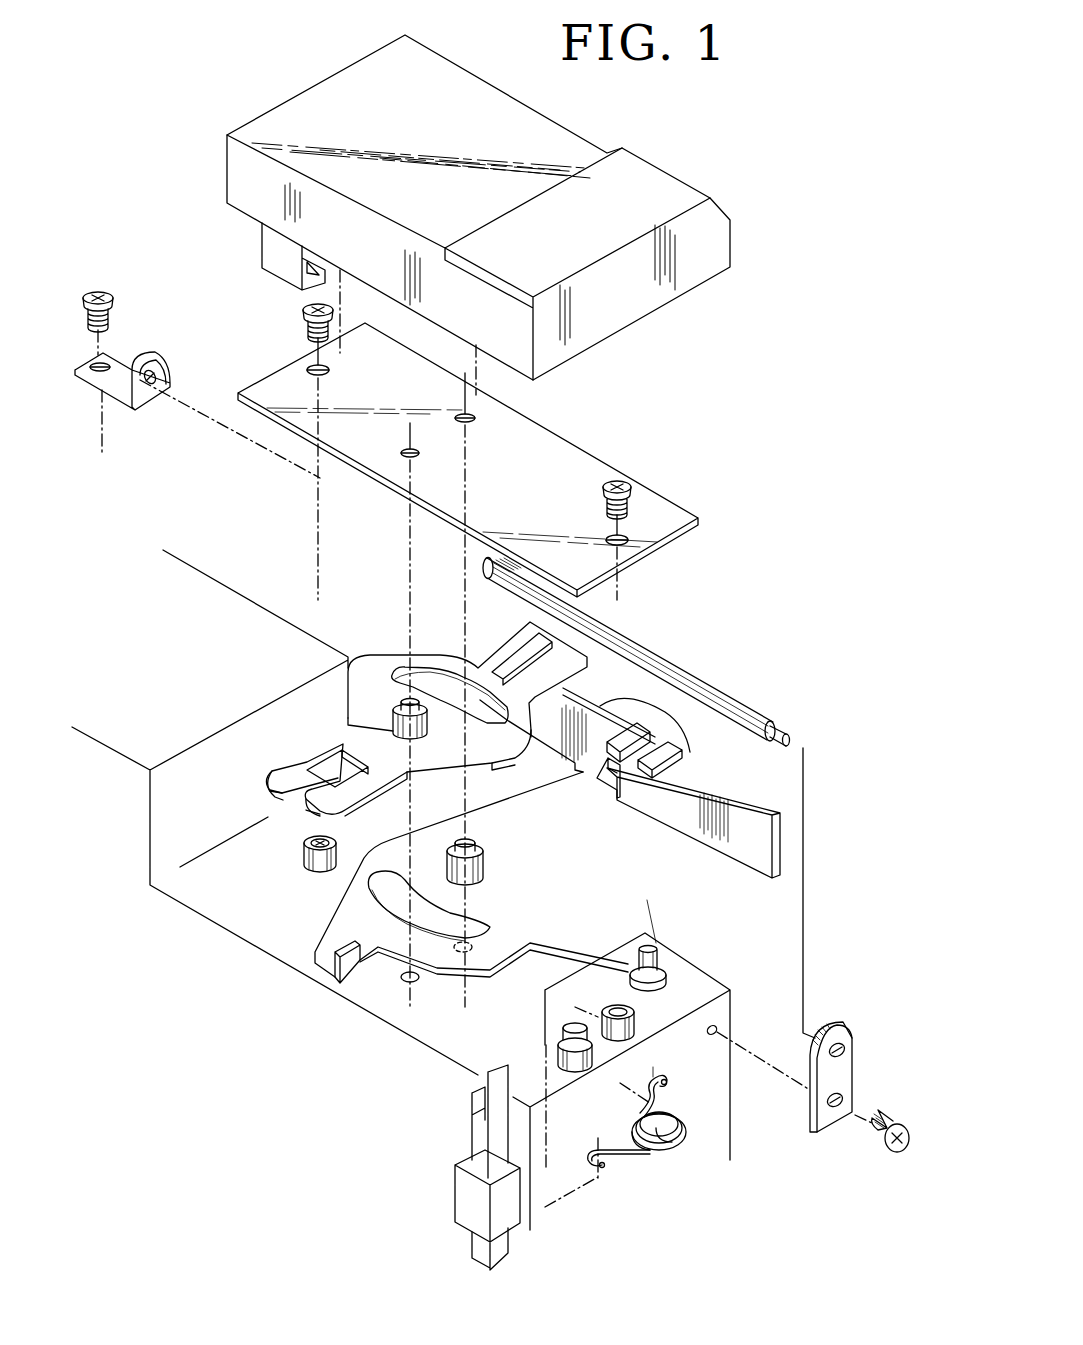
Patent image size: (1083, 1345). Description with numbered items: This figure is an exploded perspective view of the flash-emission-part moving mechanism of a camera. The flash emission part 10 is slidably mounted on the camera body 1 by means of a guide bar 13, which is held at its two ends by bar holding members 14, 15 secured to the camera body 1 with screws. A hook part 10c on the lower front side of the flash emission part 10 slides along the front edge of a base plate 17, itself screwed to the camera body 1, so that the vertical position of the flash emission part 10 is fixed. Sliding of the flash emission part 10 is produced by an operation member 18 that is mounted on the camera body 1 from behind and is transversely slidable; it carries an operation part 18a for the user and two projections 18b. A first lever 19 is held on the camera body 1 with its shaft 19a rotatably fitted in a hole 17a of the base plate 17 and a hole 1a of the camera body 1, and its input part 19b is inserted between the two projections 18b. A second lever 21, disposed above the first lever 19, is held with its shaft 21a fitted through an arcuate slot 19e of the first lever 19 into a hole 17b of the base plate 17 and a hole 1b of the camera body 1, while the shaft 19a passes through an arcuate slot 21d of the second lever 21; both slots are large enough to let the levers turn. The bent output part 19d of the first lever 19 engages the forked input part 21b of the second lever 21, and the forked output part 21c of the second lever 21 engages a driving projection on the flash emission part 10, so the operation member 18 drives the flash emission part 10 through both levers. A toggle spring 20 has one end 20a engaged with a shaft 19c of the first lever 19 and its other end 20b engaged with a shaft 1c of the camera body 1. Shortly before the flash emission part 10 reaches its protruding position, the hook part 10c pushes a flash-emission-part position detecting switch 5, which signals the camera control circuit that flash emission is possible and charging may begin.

The camera body 1 is at (183, 815).
The hole 1a is at (457, 963).
The hole 1b is at (405, 982).
The shaft 1c is at (570, 1065).
The flash-emission-part position detecting switch 5 is at (472, 1198).
The flash emission part 10 is at (665, 185).
The hook part 10c is at (277, 253).
The guide bar 13 is at (685, 680).
The bar holding member 14 is at (833, 1117).
The bar holding member 15 is at (85, 373).
The base plate 17 is at (583, 478).
The hole 17a is at (470, 413).
The hole 17b is at (398, 453).
The operation member 18 is at (767, 810).
The operation part 18a is at (673, 732).
The projections 18b is at (652, 768).
The first lever 19 is at (622, 920).
The shaft 19a is at (482, 877).
The input part 19b is at (623, 797).
The shaft 19c is at (667, 953).
The output part 19d is at (350, 967).
The arcuate slot 19e is at (368, 895).
The toggle spring 20 is at (675, 1150).
The one end of toggle spring 20a is at (602, 1167).
The other end of toggle spring 20b is at (660, 1077).
The second lever 21 is at (377, 668).
The shaft 21a is at (390, 730).
The input part 21b is at (280, 770).
The output part 21c is at (573, 655).
The arcuate slot 21d is at (420, 670).